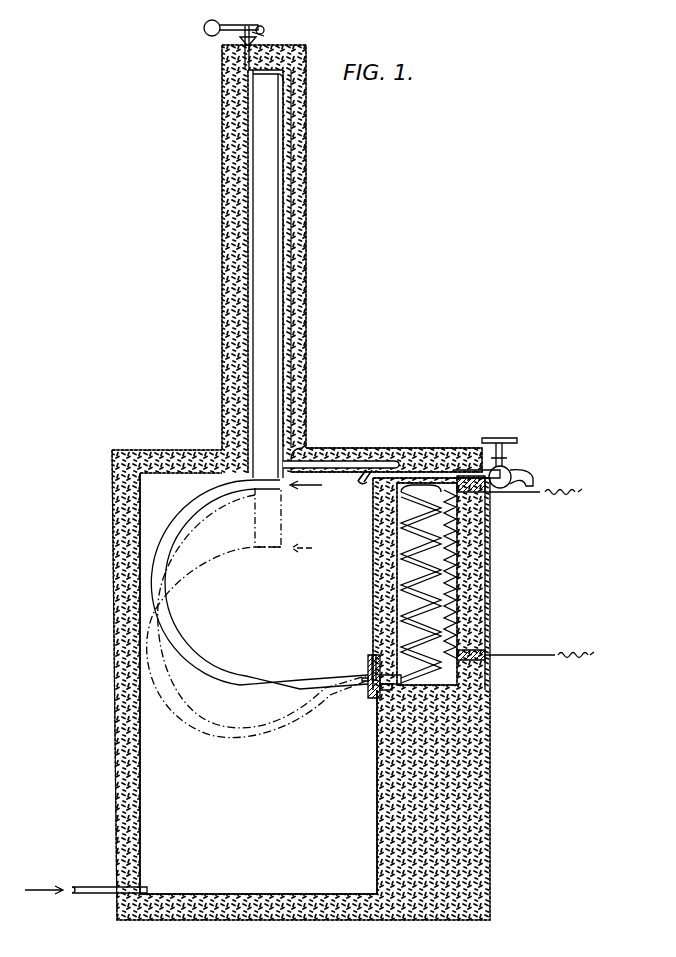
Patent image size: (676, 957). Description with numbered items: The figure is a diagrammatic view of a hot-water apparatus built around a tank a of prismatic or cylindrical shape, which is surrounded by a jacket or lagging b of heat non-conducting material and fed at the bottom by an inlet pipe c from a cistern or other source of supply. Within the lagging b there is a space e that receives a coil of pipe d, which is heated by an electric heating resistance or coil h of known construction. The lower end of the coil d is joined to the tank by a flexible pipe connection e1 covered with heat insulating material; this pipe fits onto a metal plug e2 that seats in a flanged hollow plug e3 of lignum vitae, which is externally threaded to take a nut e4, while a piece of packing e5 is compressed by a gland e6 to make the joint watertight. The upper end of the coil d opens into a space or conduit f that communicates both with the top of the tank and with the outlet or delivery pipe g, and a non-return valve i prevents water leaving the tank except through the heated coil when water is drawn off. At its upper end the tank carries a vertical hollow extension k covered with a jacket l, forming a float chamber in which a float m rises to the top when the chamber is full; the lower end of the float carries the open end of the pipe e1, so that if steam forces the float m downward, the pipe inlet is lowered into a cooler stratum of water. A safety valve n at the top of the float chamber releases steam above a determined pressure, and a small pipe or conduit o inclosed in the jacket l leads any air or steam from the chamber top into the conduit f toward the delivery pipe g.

The tank a is at (168, 742).
The jacket or lagging b is at (113, 690).
The inlet pipe c is at (98, 887).
The coil of pipe d is at (465, 576).
The space e is at (372, 585).
The flexible pipe connection e1 is at (163, 604).
The plug e2 is at (375, 688).
The flanged hollow plug e3 is at (367, 666).
The nut e4 is at (376, 656).
The packing e5 is at (384, 690).
The gland e6 is at (392, 696).
The space or conduit f is at (422, 484).
The outlet or delivery pipe g is at (511, 466).
The electric heating resistance or coil h is at (484, 558).
The non-return valve i is at (370, 476).
The vertical hollow extension k is at (284, 230).
The jacket l is at (224, 217).
The float m is at (265, 262).
The safety valve n is at (266, 38).
The small pipe or conduit o is at (301, 322).